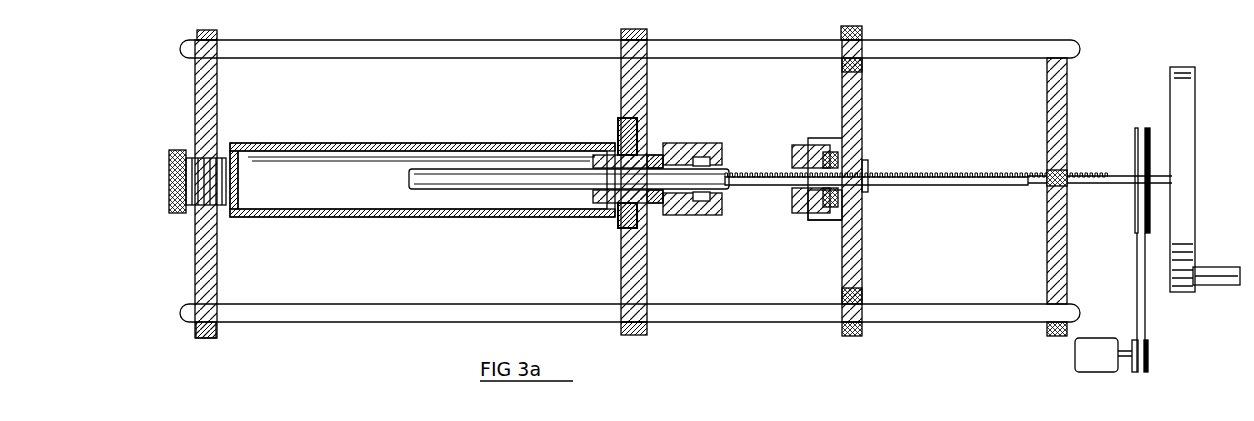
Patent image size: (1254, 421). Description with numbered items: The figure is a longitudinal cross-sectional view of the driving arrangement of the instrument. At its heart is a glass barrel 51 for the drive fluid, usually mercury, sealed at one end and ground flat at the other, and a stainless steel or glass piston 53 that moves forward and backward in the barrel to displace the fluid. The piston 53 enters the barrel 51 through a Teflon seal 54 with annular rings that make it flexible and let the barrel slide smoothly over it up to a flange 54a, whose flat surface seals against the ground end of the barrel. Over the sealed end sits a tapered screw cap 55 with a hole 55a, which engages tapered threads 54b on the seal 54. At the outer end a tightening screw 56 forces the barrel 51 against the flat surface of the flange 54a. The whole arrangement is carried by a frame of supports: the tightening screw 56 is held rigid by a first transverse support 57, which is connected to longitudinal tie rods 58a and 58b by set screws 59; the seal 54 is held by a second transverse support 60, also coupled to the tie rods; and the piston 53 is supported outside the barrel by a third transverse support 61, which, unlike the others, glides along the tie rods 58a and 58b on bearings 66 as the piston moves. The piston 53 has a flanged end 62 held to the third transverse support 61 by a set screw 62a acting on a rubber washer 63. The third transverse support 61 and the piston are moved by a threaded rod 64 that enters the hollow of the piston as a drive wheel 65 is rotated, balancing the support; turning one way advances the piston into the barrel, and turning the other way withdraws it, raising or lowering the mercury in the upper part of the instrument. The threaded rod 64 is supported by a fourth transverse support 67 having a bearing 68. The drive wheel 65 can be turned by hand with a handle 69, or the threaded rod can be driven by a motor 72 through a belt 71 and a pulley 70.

The barrel 51 is at (384, 143).
The piston 53 is at (408, 178).
The seal 54 is at (598, 152).
The flange 54a is at (619, 130).
The tapered threads 54b is at (660, 150).
The tapered screw cap 55 is at (703, 143).
The hole 55a is at (712, 162).
The tightening screw 56 is at (169, 185).
The first transverse support 57 is at (215, 100).
The longitudinal tie rod 58a is at (296, 42).
The longitudinal tie rod 58b is at (354, 322).
The set screws 59 is at (206, 31).
The second transverse support 60 is at (646, 84).
The third transverse support 61 is at (862, 116).
The flanged end 62 is at (828, 140).
The set screw 62a is at (792, 140).
The rubber washer 63 is at (824, 215).
The threaded rod 64 is at (930, 174).
The drive wheel 65 is at (1190, 113).
The bearings 66 is at (842, 296).
The fourth transverse support 67 is at (1065, 92).
The bearing 68 is at (1062, 172).
The handle 69 is at (1218, 283).
The pulley 70 is at (1136, 128).
The belt 71 is at (1136, 300).
The motor 72 is at (1098, 373).